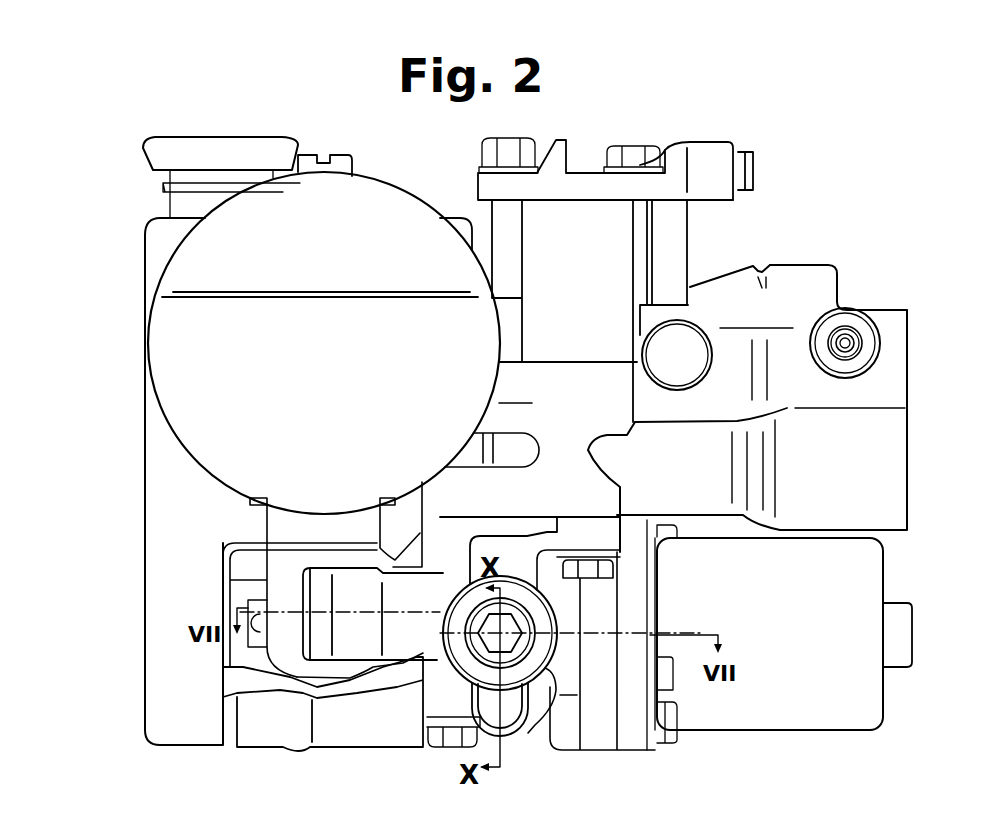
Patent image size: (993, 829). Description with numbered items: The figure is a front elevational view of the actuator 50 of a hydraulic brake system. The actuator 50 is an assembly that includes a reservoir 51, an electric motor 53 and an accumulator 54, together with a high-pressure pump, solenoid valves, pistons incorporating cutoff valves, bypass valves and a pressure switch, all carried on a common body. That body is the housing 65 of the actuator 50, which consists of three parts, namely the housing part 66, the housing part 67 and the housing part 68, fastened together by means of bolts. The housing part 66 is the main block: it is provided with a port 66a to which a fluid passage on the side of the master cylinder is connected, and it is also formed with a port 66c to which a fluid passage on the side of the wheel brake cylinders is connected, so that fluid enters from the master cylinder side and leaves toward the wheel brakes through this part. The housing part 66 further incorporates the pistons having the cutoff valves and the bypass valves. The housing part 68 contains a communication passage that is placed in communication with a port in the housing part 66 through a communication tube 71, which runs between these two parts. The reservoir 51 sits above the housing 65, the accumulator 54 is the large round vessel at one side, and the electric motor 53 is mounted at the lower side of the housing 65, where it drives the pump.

The actuator 50 is at (853, 257).
The reservoir 51 is at (152, 530).
The electric motor 53 is at (857, 712).
The accumulator 54 is at (160, 375).
The housing 65 is at (885, 308).
The housing part 66 is at (890, 509).
The port 66a is at (853, 343).
The port 66c is at (815, 265).
The housing part 67 is at (437, 697).
The housing part 68 is at (673, 150).
The communication tube 71 is at (677, 248).